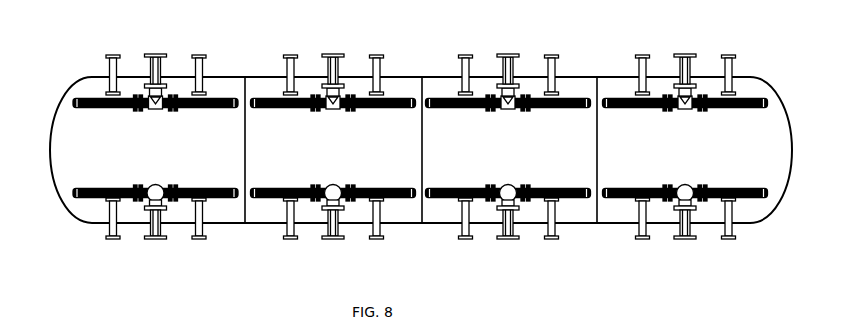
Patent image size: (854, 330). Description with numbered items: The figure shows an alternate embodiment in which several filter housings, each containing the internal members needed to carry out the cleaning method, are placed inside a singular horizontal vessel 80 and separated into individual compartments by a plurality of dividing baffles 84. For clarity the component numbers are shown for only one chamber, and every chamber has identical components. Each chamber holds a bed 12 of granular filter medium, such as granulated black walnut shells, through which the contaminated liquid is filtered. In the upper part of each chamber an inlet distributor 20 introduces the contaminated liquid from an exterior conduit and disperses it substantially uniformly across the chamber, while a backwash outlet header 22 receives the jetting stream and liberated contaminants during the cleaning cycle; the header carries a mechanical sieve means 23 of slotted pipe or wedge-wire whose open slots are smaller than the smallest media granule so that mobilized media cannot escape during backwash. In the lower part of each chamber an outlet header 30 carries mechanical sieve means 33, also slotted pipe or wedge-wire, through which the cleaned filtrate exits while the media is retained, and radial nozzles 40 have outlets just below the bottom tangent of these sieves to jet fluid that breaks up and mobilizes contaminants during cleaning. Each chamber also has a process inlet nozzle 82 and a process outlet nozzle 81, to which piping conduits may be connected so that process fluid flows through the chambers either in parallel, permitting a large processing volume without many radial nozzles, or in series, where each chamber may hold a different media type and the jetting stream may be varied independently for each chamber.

The bed of granular filter medium 12 is at (397, 150).
The horizontal vessel 80 is at (50, 122).
The dividing baffles 84 is at (246, 138).
The inlet distributors 20 is at (207, 93).
The mechanical sieve means 23 is at (100, 111).
The backwash outlet header 22 is at (154, 111).
The process inlet nozzle 82 is at (157, 53).
The radial nozzles 40 is at (110, 201).
The mechanical sieve means 33 is at (118, 174).
The outlet header 30 is at (158, 184).
The process outlet nozzle 81 is at (167, 240).